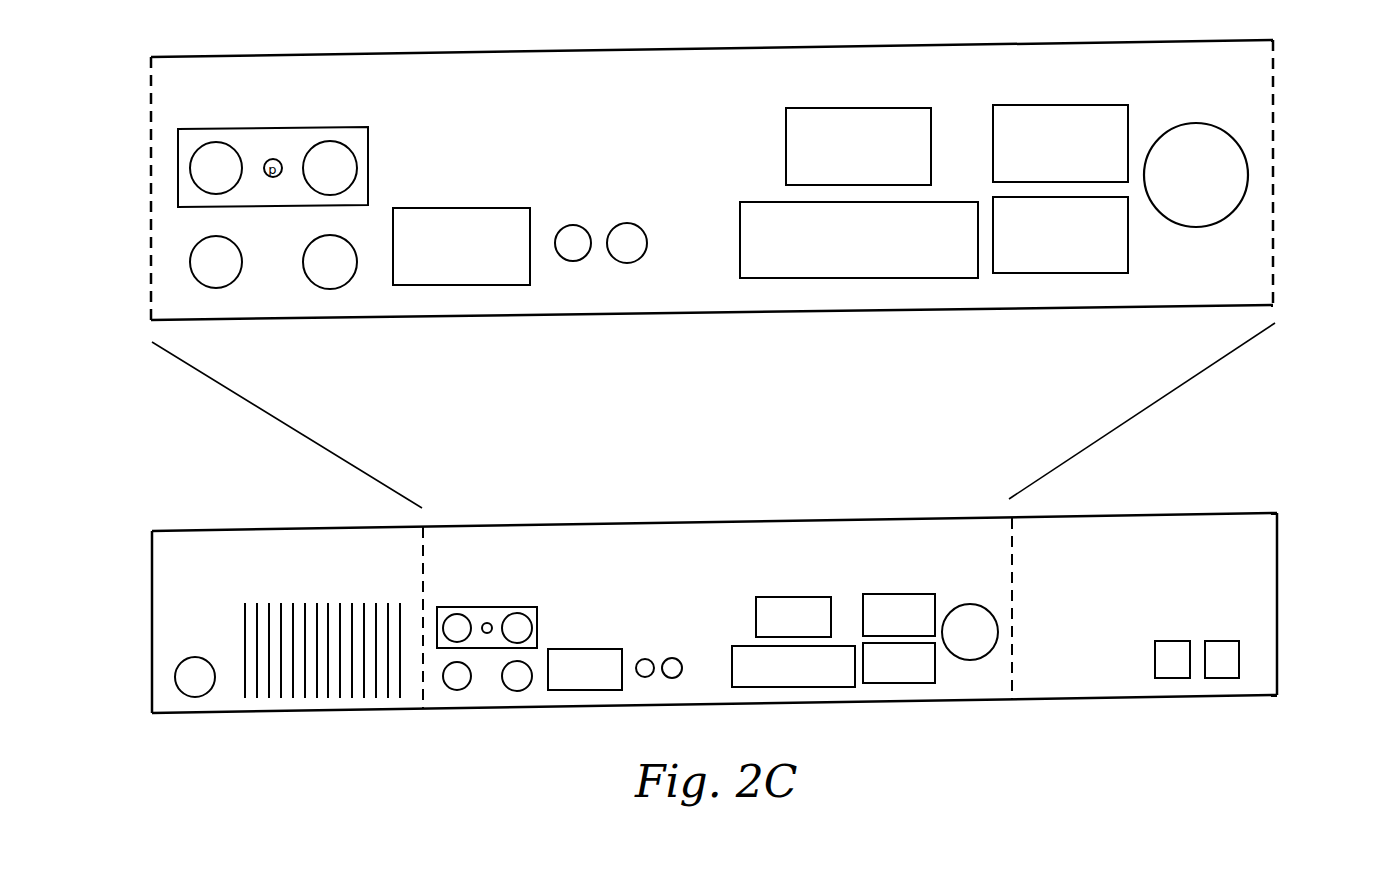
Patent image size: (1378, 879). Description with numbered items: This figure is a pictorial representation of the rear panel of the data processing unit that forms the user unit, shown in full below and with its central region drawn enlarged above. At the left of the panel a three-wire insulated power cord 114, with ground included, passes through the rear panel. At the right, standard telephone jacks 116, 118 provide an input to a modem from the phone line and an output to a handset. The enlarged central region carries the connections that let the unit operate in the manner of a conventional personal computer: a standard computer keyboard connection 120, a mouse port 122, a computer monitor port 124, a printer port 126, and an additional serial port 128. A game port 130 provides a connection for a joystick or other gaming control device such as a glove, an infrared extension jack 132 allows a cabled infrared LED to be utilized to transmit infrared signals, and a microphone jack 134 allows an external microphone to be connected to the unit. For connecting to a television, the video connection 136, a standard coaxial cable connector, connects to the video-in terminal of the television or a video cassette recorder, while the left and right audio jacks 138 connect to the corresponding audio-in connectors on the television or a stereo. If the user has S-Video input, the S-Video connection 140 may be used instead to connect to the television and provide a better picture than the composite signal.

The power cord 114 is at (175, 680).
The telephone jack 116 is at (1173, 641).
The telephone jack 118 is at (1226, 641).
The computer keyboard connection 120 is at (1248, 172).
The mouse port 122 is at (1093, 105).
The computer monitor port 124 is at (893, 108).
The printer port 126 is at (790, 278).
The additional serial port 128 is at (1047, 273).
The game port 130 is at (493, 208).
The infrared extension jack 132 is at (573, 225).
The microphone jack 134 is at (647, 247).
The video connection 136 is at (357, 168).
The left and right audio jacks 138 is at (198, 186).
The S-Video connection 140 is at (312, 240).